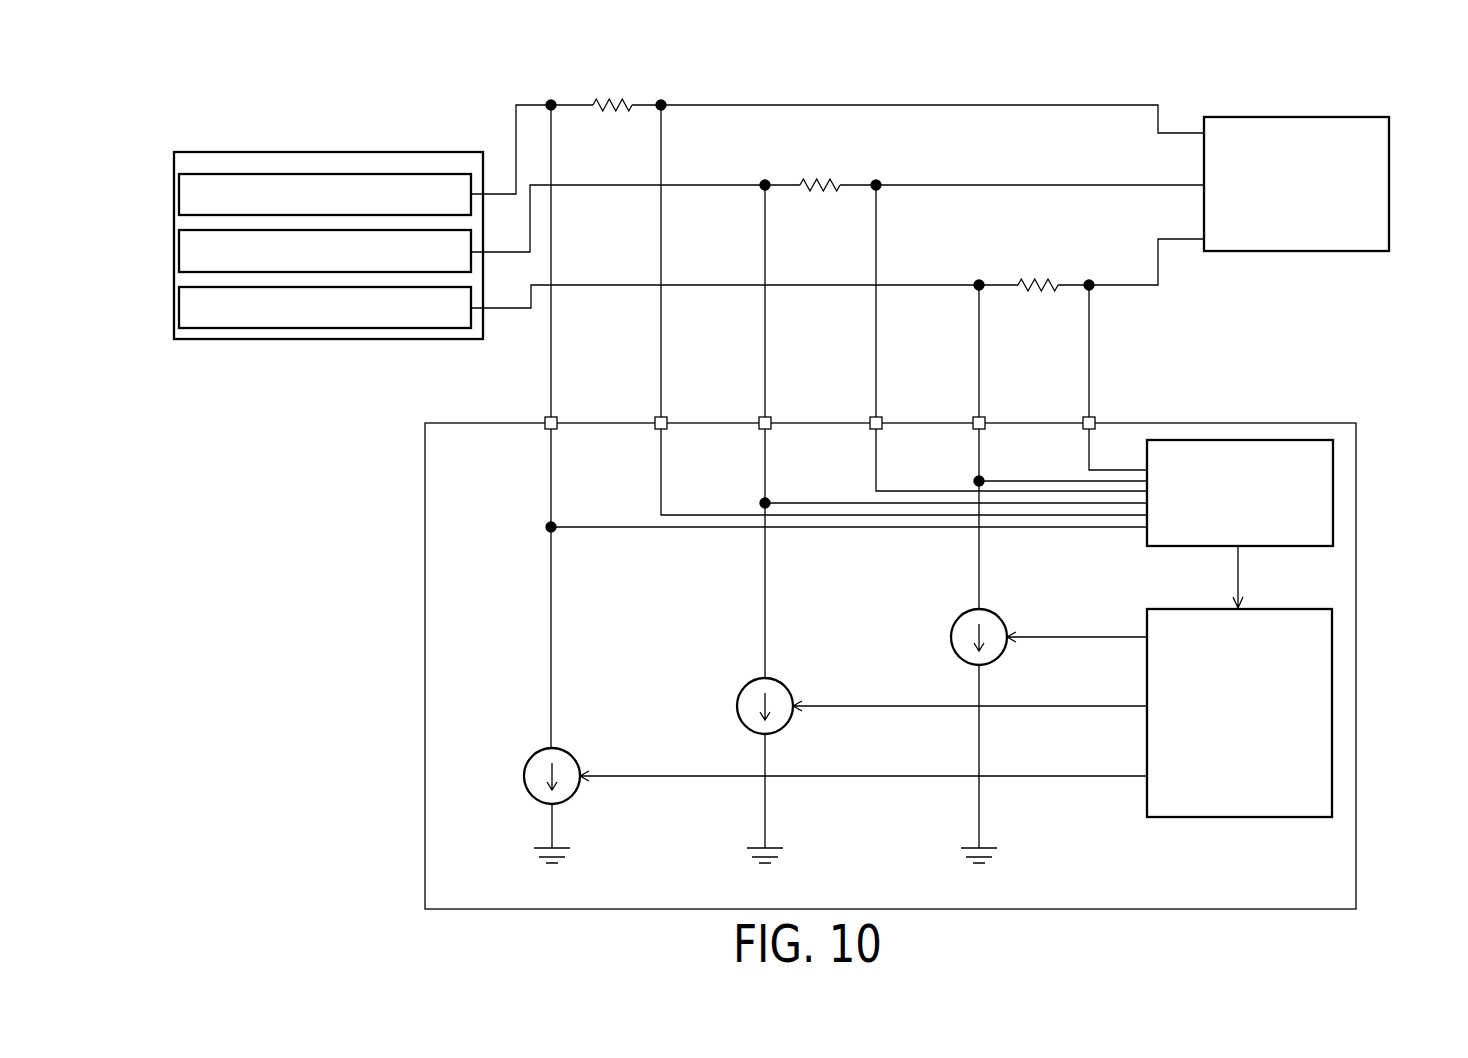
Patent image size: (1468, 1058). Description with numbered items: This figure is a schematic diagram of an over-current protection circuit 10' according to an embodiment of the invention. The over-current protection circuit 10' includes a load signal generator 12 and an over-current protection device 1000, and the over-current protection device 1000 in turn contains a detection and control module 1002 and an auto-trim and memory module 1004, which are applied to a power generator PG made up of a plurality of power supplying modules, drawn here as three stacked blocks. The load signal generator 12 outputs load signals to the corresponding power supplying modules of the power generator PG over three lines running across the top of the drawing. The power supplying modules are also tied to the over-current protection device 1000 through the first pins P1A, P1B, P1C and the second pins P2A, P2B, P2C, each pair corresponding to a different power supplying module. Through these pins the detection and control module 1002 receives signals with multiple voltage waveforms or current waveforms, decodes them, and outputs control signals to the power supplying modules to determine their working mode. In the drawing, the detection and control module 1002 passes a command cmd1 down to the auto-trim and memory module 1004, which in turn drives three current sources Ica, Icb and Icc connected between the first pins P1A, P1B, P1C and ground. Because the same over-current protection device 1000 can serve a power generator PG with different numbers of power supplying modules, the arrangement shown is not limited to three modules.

The over-current protection circuit 10' is at (767, 475).
The power generator PG is at (325, 152).
The load signal generator 12 is at (1397, 180).
The over-current protection device 1000 is at (1308, 413).
The detection and control module 1002 is at (1333, 473).
The auto-trim and memory module 1004 is at (1333, 718).
The first pin P1A is at (547, 417).
The second pin P2A is at (657, 417).
The first pin P1B is at (761, 417).
The second pin P2B is at (872, 417).
The first pin P1C is at (975, 417).
The second pin P2C is at (1085, 417).
The current source Ica is at (538, 752).
The current source Icb is at (751, 682).
The current source Icc is at (965, 613).
The command signal cmd1 is at (1268, 577).